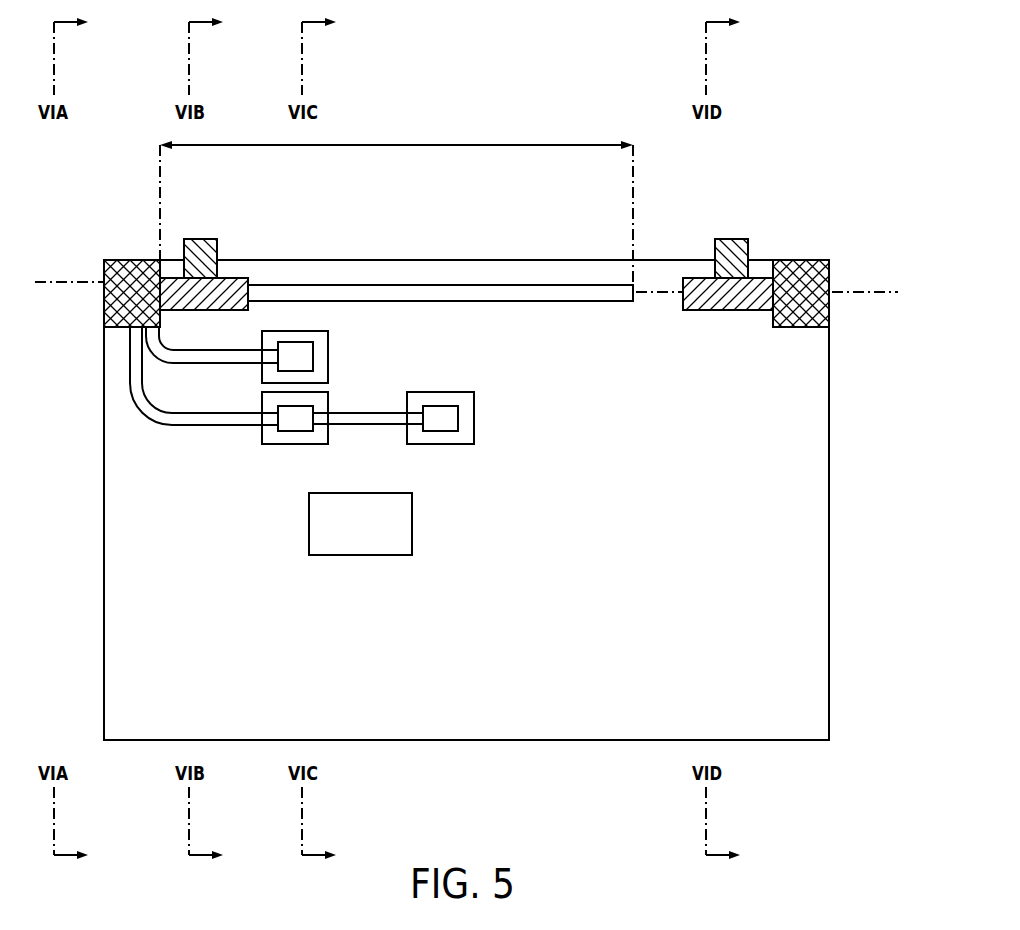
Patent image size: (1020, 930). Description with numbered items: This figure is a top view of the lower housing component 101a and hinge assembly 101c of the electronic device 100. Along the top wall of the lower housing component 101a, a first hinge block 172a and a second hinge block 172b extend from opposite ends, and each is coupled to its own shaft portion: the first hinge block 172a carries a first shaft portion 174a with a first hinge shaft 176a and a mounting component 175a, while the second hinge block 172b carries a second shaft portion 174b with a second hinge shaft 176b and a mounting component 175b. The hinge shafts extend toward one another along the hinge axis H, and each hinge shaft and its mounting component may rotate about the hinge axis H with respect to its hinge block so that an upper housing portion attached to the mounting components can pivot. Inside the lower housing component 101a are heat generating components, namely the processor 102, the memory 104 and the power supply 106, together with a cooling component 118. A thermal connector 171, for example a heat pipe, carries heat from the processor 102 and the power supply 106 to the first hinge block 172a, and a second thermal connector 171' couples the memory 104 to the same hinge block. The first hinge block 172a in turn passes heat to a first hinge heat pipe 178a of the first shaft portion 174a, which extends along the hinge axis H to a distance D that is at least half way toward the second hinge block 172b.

The electronic device 100 is at (466, 536).
The lower housing component 101a is at (105, 752).
The hinge assembly 101c is at (126, 211).
The processor 102 is at (273, 445).
The memory 104 is at (330, 372).
The power supply 106 is at (458, 445).
The cooling component 118 is at (360, 524).
The thermal connector 171 is at (285, 411).
The second thermal connector 171' is at (212, 366).
The first hinge block 172a is at (140, 258).
The second hinge block 172b is at (790, 258).
The first shaft portion 174a is at (234, 232).
The second shaft portion 174b is at (705, 221).
The mounting component 175a is at (197, 238).
The mounting component 175b is at (742, 238).
The first hinge shaft 176a is at (233, 277).
The second hinge shaft 176b is at (693, 277).
The first hinge heat pipe 178a is at (360, 285).
The distance D is at (460, 147).
The hinge axis H is at (68, 282).